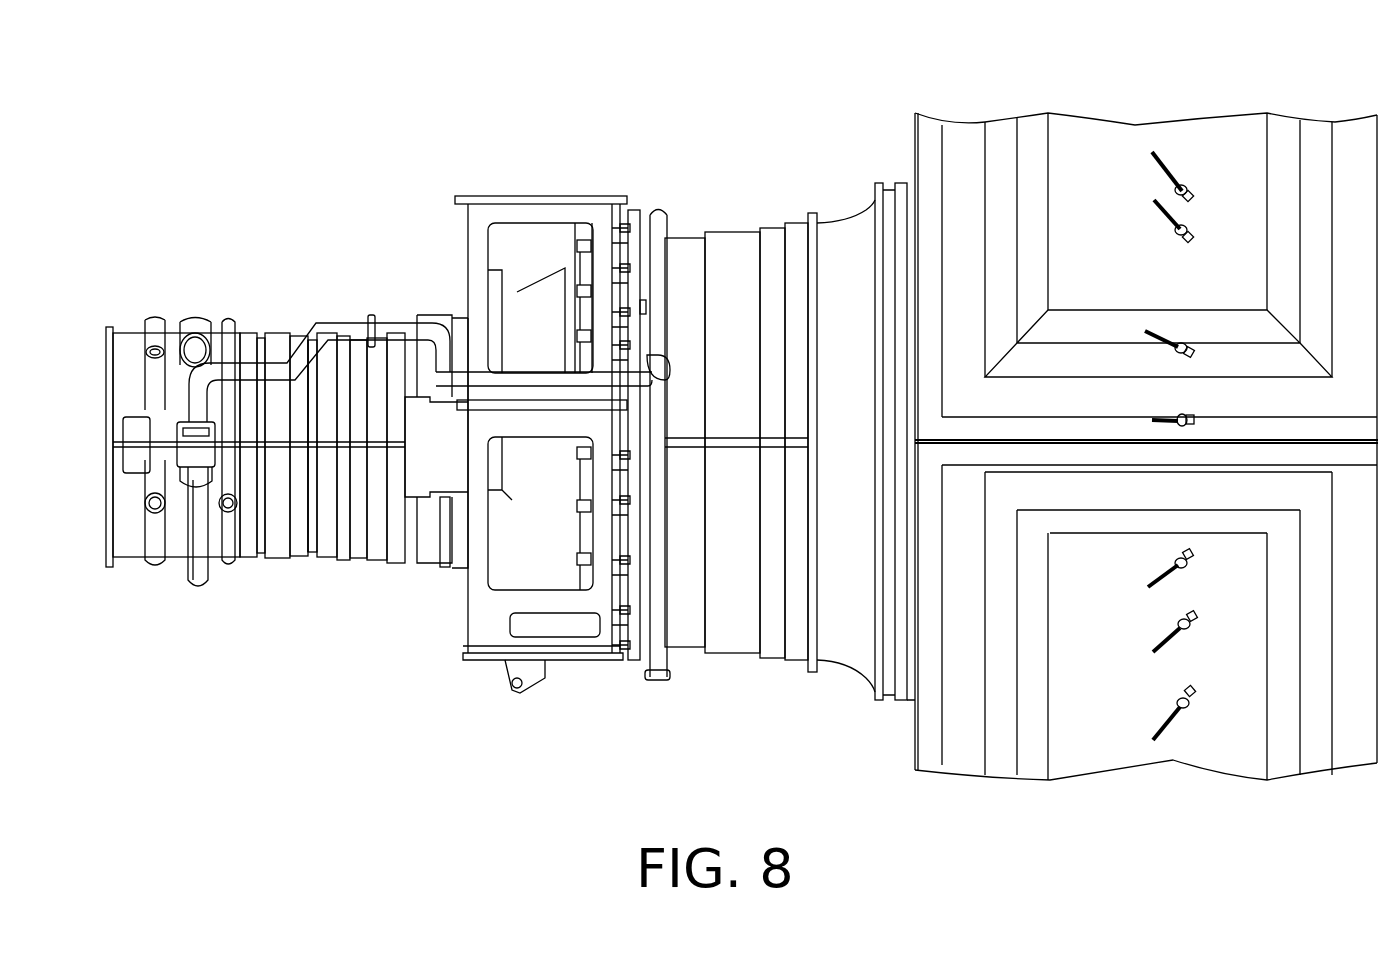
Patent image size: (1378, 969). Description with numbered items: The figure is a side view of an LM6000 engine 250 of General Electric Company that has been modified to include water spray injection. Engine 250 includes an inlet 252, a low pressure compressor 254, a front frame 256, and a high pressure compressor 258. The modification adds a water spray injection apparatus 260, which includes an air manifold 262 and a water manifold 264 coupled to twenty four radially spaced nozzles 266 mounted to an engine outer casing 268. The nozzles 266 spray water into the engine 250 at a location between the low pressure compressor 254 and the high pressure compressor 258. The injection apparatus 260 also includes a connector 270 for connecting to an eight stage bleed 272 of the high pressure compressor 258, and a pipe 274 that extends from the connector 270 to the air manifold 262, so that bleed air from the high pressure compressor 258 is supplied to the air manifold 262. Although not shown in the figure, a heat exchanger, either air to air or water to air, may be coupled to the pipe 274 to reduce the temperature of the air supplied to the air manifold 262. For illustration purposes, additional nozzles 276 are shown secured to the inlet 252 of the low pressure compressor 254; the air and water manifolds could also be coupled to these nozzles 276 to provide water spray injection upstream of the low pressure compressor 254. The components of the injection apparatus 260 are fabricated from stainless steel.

The engine 250 is at (471, 92).
The inlet 252 is at (1358, 162).
The low pressure compressor 254 is at (775, 200).
The front frame 256 is at (569, 150).
The high pressure compressor 258 is at (270, 314).
The water spray injection apparatus 260 is at (403, 250).
The air manifold 262 is at (666, 236).
The water manifold 264 is at (648, 540).
The nozzles 266 is at (578, 300).
The engine outer casing 268 is at (330, 275).
The connector 270 is at (215, 455).
The eight stage bleed 272 is at (178, 495).
The pipe 274 is at (362, 316).
The nozzles 276 is at (1155, 222).